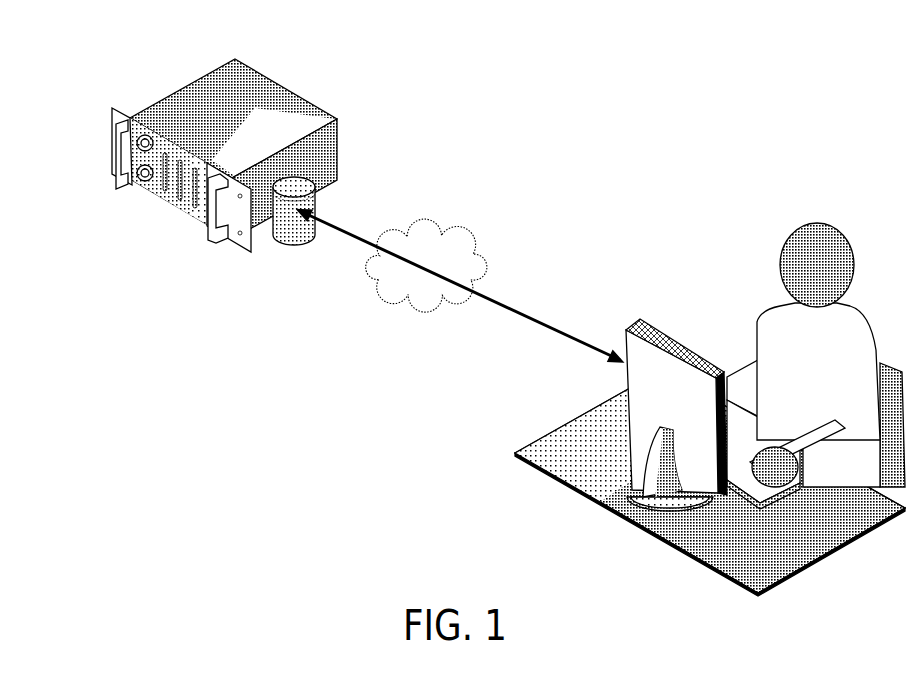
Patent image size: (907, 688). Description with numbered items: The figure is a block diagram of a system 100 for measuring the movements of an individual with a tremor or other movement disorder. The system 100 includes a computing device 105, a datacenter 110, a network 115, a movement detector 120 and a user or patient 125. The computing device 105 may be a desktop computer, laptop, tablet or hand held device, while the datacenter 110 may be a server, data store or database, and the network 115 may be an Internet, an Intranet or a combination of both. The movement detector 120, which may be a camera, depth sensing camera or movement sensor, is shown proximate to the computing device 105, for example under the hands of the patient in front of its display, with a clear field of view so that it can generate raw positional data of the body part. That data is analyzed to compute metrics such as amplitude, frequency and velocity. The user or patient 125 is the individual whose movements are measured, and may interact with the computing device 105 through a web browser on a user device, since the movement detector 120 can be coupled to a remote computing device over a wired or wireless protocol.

The system 100 is at (848, 50).
The computing device 105 is at (632, 383).
The datacenter 110 is at (186, 93).
The network 115 is at (450, 232).
The movement detector 120 is at (677, 338).
The user or patient 125 is at (795, 305).